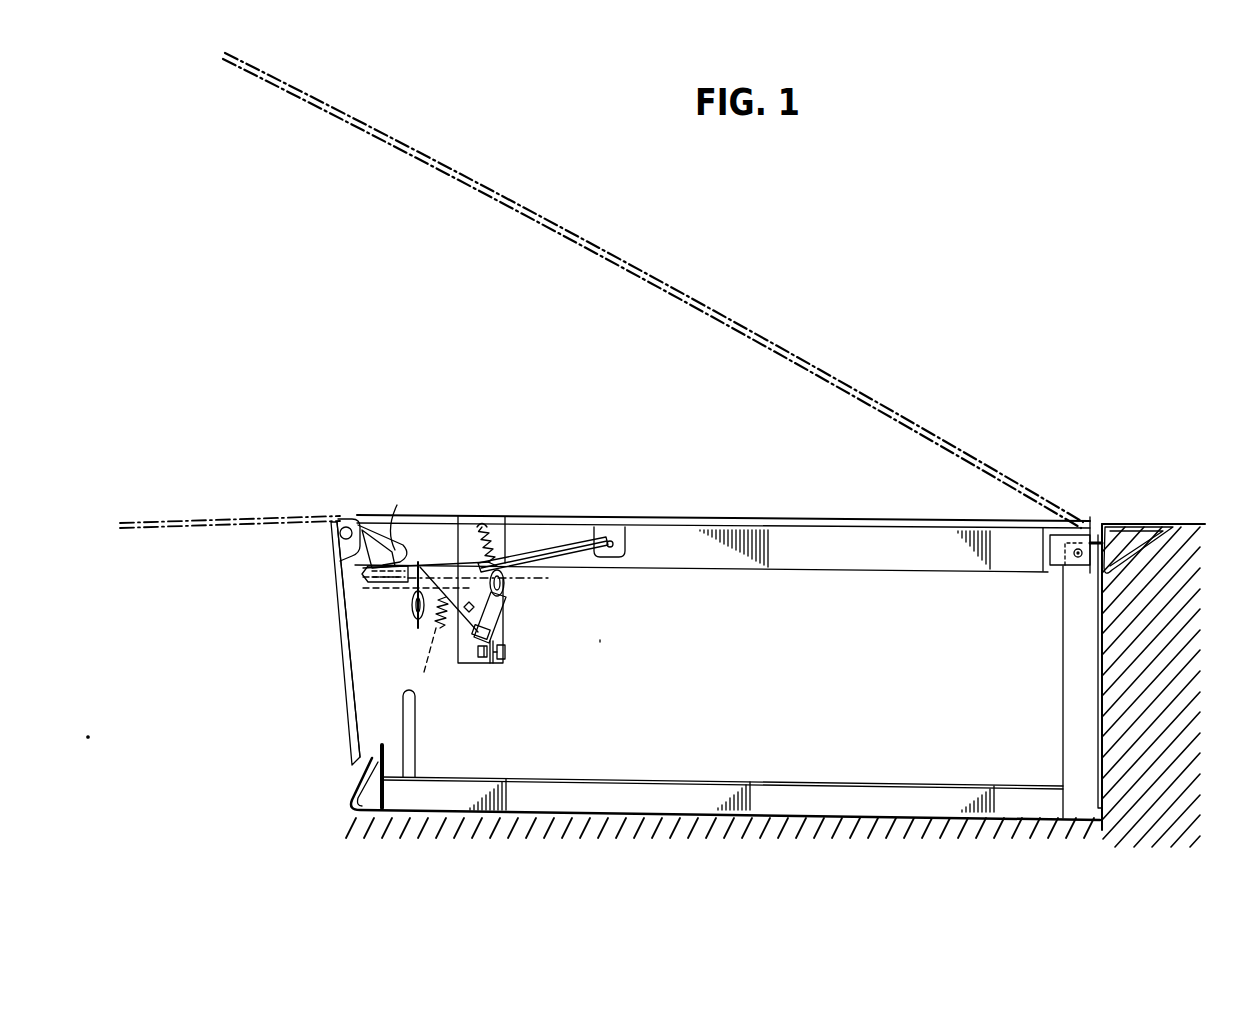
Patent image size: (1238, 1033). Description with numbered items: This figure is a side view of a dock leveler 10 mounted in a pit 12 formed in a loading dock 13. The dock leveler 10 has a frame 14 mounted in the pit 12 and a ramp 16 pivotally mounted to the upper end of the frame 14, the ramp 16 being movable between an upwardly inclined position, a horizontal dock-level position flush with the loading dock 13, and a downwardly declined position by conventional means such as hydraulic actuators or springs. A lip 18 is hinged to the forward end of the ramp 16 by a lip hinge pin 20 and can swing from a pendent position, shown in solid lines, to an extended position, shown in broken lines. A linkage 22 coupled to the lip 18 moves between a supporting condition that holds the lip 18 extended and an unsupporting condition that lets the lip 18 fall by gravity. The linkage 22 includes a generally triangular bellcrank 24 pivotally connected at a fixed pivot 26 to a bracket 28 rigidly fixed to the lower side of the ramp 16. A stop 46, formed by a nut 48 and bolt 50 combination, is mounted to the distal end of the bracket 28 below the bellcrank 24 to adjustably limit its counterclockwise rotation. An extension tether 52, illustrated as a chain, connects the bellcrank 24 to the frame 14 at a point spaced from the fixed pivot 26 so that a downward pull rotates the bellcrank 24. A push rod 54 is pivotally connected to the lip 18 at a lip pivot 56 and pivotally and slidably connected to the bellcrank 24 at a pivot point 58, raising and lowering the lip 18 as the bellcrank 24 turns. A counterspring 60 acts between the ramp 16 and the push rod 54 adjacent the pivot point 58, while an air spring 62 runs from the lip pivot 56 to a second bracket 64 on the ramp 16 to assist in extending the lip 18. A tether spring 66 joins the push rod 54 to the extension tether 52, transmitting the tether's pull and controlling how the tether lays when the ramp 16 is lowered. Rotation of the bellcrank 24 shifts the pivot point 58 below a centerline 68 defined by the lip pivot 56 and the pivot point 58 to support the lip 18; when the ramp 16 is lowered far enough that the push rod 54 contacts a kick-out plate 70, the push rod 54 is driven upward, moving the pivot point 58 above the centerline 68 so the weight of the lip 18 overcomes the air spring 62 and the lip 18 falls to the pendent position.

The dock leveler 10 is at (660, 468).
The pit 12 is at (1032, 690).
The loading dock 13 is at (1168, 523).
The frame 14 is at (526, 788).
The ramp 16 is at (590, 240).
The lip 18 is at (332, 102).
The lip hinge pin 20 is at (336, 540).
The linkage 22 is at (600, 640).
The bellcrank 24 is at (506, 600).
The fixed pivot 26 is at (445, 652).
The bracket 28 is at (492, 636).
The stop 46 is at (505, 662).
The nut 48 is at (506, 656).
The bolt 50 is at (476, 665).
The extension tether 52 is at (411, 603).
The push rod 54 is at (398, 586).
The lip pivot 56 is at (380, 560).
The pivot point 58 is at (510, 582).
The counterspring 60 is at (487, 523).
The air spring 62 is at (588, 540).
The second bracket 64 is at (630, 540).
The tether spring 66 is at (420, 626).
The centerline 68 is at (335, 612).
The kick-out plate 70 is at (416, 745).